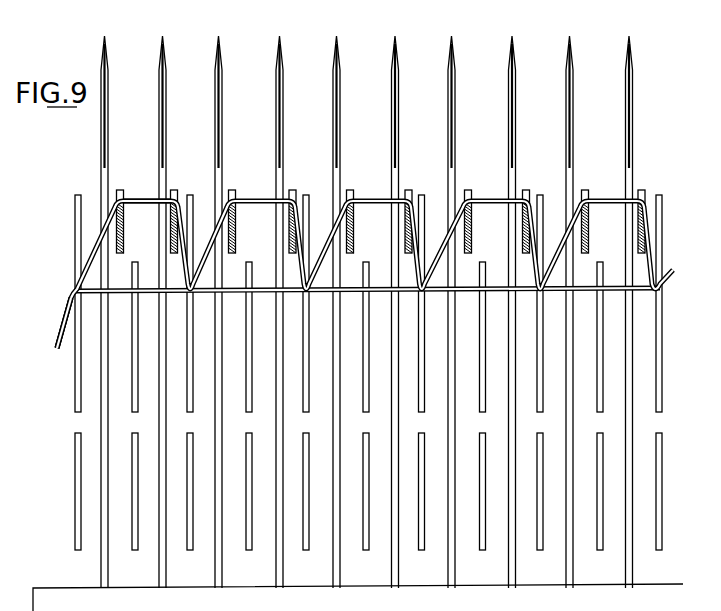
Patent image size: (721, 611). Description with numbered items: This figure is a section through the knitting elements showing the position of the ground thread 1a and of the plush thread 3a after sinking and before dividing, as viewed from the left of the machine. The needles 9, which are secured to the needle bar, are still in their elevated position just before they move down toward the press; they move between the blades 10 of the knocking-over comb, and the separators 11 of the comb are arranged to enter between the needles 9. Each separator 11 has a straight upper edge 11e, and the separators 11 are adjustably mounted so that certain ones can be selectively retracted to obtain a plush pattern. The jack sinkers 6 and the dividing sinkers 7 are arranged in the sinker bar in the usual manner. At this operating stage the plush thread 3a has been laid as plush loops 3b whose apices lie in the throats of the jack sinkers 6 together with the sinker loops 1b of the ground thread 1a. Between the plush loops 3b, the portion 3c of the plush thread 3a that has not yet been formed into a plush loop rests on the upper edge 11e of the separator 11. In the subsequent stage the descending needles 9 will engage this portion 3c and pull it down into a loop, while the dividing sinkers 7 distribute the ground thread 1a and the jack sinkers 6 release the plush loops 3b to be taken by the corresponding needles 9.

The needles 9 is at (222, 170).
The jack sinkers 6 is at (73, 222).
The dividing sinkers 7 is at (133, 406).
The blades of the knocking-over comb 10 is at (77, 465).
The separators 11 is at (352, 217).
The straight upper edge 11e is at (122, 212).
The ground thread 1a is at (71, 328).
The sinker loops 1b is at (193, 298).
The plush thread 3a is at (57, 333).
The plush loops 3b is at (193, 282).
The portion of the plush thread 3c is at (133, 200).